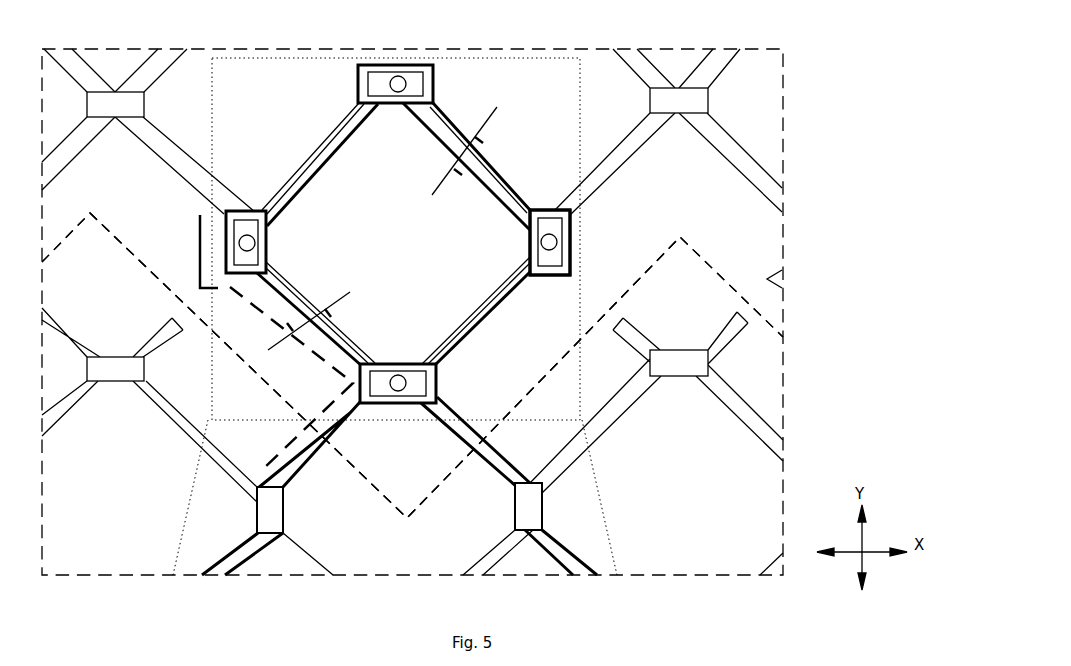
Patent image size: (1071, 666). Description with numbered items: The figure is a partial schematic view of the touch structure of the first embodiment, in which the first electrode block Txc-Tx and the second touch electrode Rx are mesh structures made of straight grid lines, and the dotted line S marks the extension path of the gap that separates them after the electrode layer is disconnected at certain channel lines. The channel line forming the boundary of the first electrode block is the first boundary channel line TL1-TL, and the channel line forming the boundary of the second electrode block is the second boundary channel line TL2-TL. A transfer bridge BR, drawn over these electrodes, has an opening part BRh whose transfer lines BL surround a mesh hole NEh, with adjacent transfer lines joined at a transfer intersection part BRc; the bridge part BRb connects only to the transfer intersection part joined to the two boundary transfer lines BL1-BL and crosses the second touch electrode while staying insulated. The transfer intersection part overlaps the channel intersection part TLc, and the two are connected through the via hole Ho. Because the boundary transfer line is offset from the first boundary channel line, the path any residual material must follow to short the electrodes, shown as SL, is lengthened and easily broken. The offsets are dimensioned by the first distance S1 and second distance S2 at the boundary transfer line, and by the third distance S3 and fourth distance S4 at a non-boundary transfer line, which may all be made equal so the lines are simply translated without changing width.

The mesh hole NEh is at (240, 78).
The opening part BRh is at (581, 85).
The bridge part BRb is at (195, 483).
The transfer intersection part BRc is at (545, 215).
The transfer bridge BR is at (852, 172).
The first boundary channel line TL1-TL is at (155, 154).
The second boundary channel line TL2-TL is at (67, 340).
The channel intersection part TLc is at (530, 236).
The extension path SL is at (197, 231).
The via hole Ho is at (550, 253).
The first distance S1 is at (301, 321).
The second distance S2 is at (329, 297).
The third distance S3 is at (455, 151).
The fourth distance S4 is at (480, 121).
The boundary transfer line BL1-BL is at (270, 376).
The transfer line BL is at (463, 416).
The first electrode block Txc-Tx is at (757, 218).
The extension path of the gap S is at (767, 318).
The second touch electrode Rx is at (750, 370).